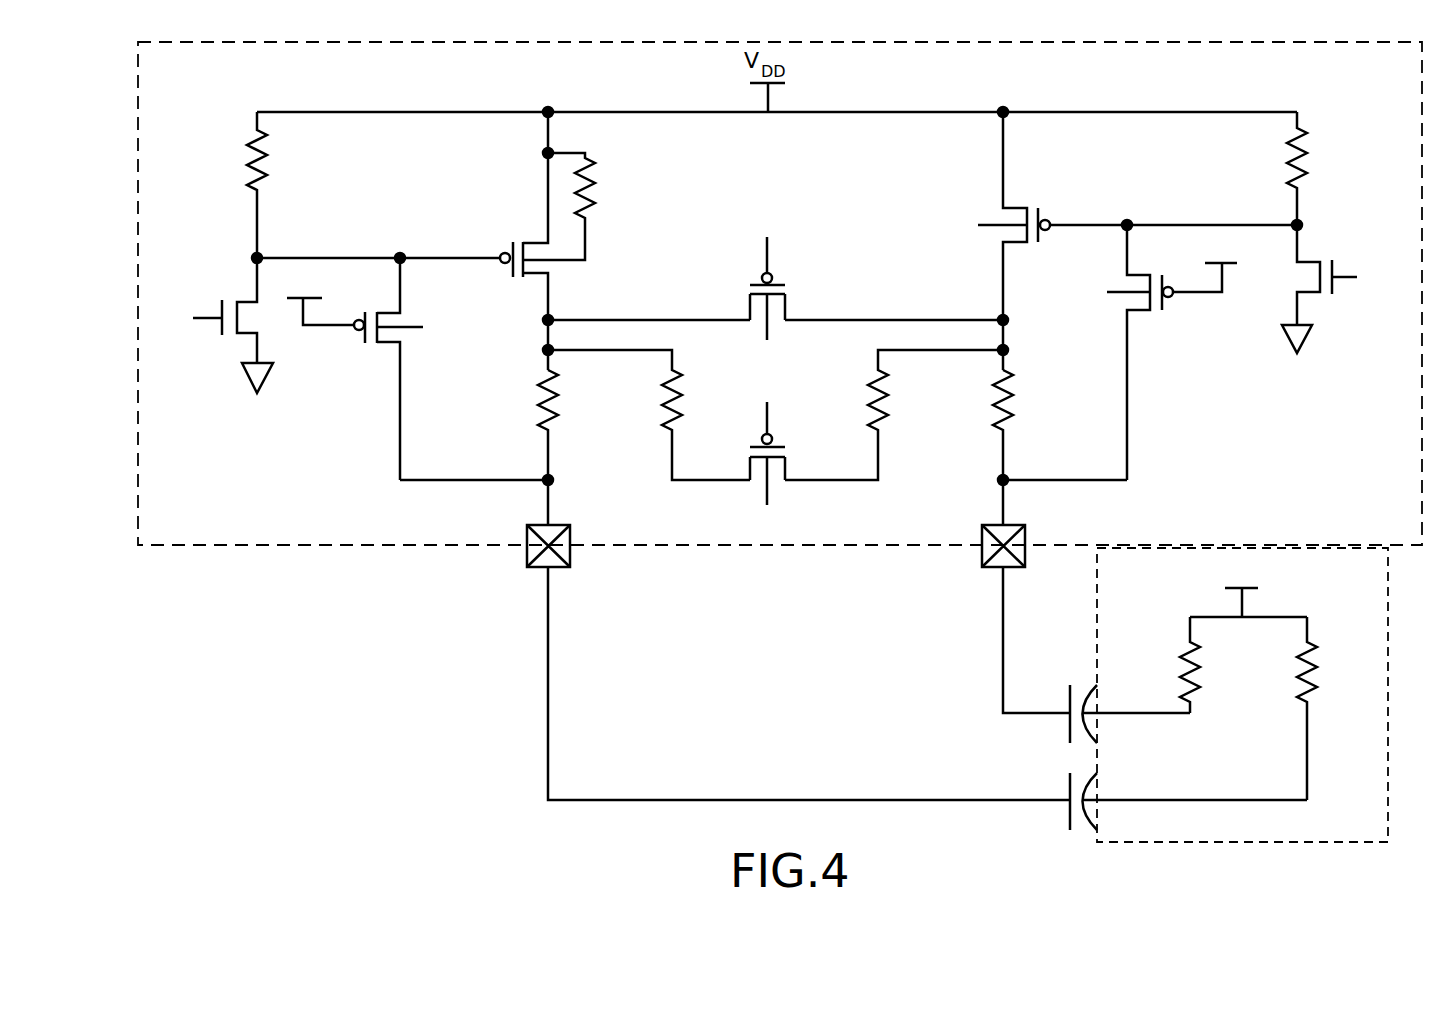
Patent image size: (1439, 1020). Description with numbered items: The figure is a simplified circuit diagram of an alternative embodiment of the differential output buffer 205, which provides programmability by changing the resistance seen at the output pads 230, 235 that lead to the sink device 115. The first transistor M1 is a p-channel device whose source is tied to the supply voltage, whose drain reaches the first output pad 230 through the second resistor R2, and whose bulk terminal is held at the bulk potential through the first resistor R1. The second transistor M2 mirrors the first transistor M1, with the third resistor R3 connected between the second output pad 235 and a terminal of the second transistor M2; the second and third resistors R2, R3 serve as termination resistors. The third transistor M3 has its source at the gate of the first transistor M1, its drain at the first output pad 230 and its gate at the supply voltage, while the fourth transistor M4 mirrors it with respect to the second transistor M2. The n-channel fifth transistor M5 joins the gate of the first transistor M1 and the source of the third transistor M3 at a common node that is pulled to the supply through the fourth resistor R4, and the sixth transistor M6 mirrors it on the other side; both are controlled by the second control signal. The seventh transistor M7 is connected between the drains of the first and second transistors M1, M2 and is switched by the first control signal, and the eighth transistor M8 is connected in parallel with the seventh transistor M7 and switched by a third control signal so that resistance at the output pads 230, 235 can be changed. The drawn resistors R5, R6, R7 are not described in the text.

The output buffer 205 is at (138, 182).
The sink device 115 is at (1388, 702).
The first output pad 230 is at (528, 568).
The second output pad 235 is at (982, 567).
The first resistor R1 is at (593, 187).
The second resistor R2 is at (557, 390).
The third resistor R3 is at (993, 400).
The fourth resistor R4 is at (268, 172).
The resistor R5 is at (1310, 162).
The resistor R6 is at (1190, 650).
The resistor R7 is at (1305, 663).
The first transistor M1 is at (540, 238).
The second transistor M2 is at (1017, 208).
The third transistor M3 is at (385, 345).
The fourth transistor M4 is at (1140, 312).
The fifth transistor M5 is at (237, 300).
The sixth transistor M6 is at (1310, 257).
The seventh transistor M7 is at (787, 303).
The eighth transistor M8 is at (787, 470).